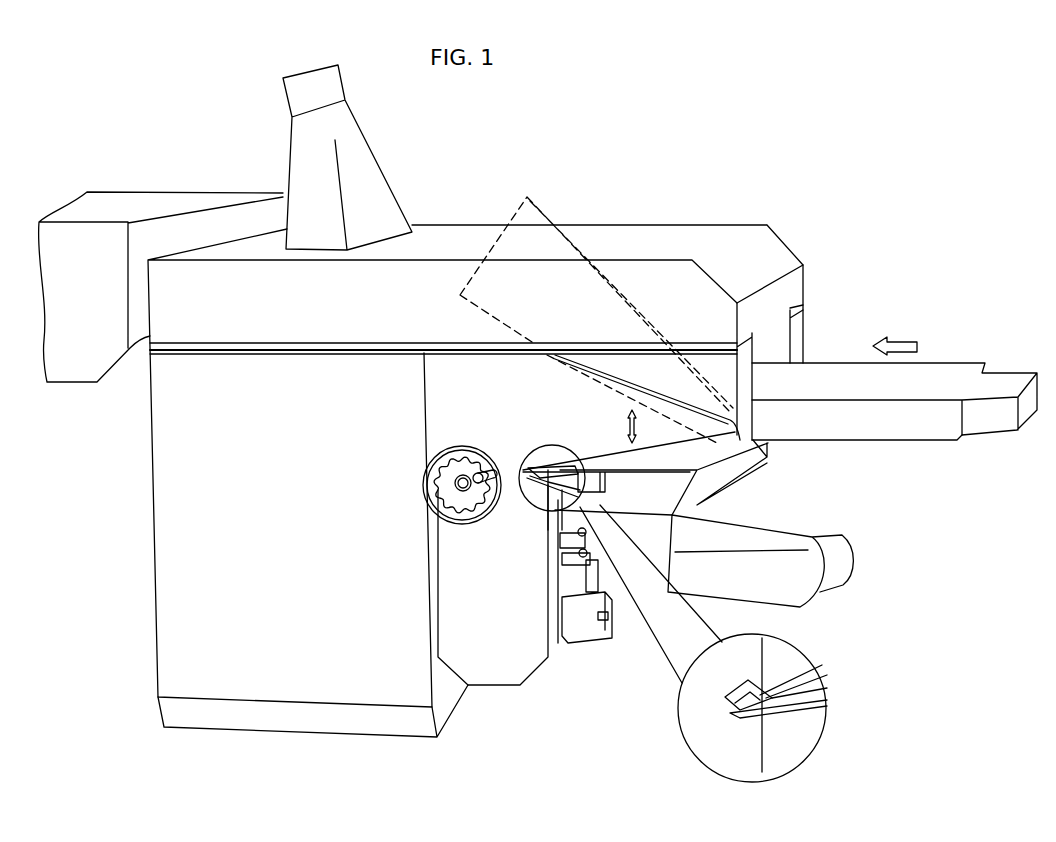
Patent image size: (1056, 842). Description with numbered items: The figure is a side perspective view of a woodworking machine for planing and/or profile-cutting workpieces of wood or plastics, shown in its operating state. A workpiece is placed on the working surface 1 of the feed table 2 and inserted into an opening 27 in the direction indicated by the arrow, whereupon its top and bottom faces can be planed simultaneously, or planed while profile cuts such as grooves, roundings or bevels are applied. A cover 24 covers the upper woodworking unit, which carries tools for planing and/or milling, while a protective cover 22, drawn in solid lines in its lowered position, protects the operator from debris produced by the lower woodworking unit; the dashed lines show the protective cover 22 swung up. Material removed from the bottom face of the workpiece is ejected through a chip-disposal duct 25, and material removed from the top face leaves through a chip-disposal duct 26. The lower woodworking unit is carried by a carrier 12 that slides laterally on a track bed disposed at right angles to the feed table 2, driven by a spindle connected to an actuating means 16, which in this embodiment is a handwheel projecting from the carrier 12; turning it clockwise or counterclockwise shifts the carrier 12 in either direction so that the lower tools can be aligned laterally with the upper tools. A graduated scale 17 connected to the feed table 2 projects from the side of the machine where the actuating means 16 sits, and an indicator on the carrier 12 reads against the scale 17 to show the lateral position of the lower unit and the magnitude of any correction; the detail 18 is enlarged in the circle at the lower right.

The working surface 1 is at (845, 380).
The feed table 2 is at (893, 425).
The carrier 12 is at (506, 699).
The actuating means 16 is at (422, 492).
The graduated scale 17 is at (533, 500).
The guide plate 18 is at (543, 472).
The protective cover 22 is at (557, 383).
The cover 24 is at (687, 237).
The chip-disposal duct 25 is at (755, 537).
The chip-disposal duct 26 is at (363, 185).
The opening 27 is at (787, 337).